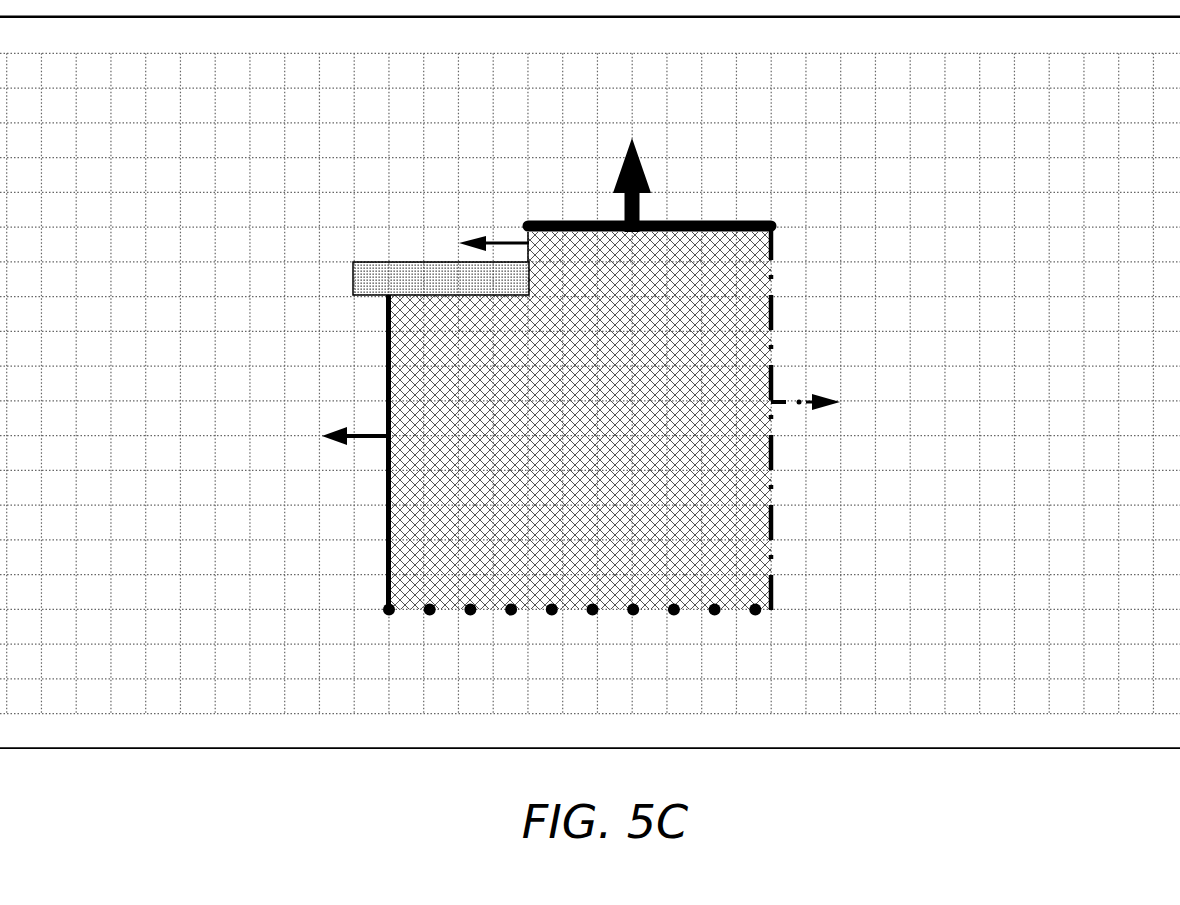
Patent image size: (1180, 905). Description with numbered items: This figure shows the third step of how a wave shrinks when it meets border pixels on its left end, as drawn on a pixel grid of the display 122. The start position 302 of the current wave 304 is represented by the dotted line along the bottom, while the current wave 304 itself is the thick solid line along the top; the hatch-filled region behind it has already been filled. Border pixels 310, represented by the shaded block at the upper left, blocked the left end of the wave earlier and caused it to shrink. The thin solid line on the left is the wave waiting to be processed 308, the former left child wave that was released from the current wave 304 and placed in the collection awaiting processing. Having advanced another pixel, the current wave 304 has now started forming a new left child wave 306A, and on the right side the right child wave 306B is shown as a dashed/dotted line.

The display 122 is at (225, 749).
The start position of the current wave 302 is at (717, 616).
The current wave 304 is at (710, 193).
The left child wave 306A is at (525, 236).
The right child wave 306B is at (773, 328).
The wave waiting to be processed 308 is at (388, 348).
The border pixels 310 is at (423, 262).